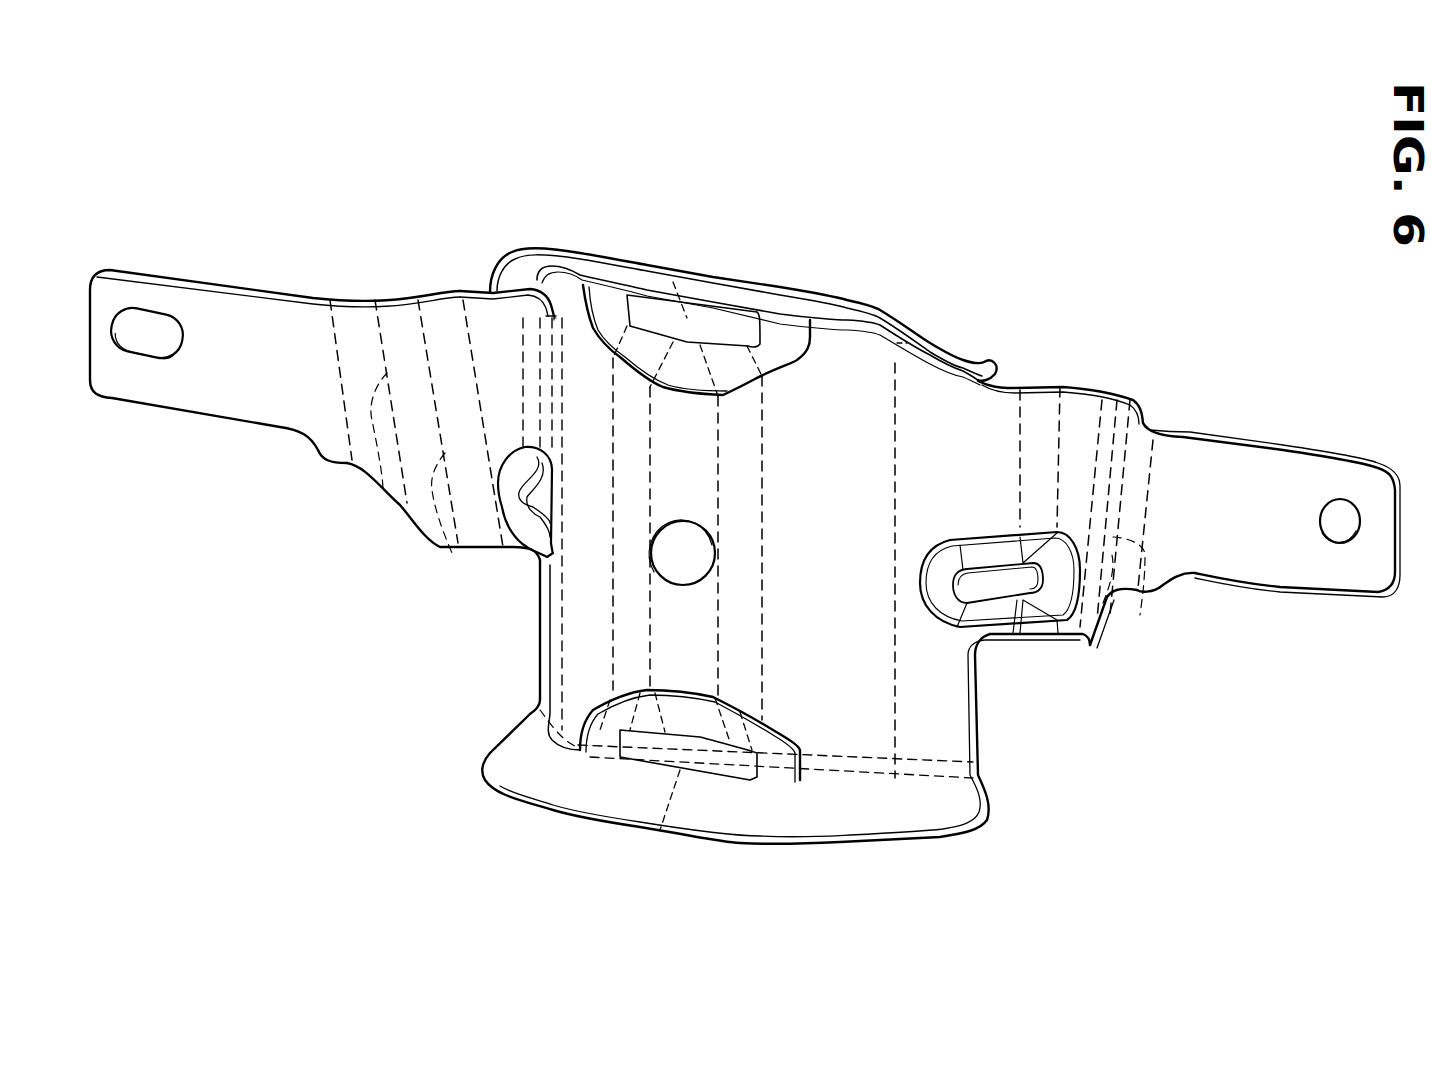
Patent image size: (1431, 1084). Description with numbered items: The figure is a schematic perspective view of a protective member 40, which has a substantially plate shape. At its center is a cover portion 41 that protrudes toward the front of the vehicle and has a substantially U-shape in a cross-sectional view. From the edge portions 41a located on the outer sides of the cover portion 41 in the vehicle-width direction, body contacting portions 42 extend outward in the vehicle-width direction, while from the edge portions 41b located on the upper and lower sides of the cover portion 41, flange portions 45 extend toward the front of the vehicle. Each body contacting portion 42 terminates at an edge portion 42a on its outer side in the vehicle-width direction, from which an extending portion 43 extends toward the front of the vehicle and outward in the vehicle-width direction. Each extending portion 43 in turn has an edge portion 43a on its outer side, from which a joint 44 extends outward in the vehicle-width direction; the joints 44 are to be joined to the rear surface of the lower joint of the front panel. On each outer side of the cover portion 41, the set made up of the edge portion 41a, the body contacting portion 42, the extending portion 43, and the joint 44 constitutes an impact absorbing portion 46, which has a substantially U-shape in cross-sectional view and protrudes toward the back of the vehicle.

The protective member 40 is at (918, 182).
The cover portion 41 is at (833, 657).
The edge portion 41a is at (553, 335).
The edge portion 41b is at (782, 305).
The body contacting portion 42 is at (490, 362).
The edge portion 42a is at (452, 555).
The extending portion 43 is at (397, 337).
The edge portion 43a is at (383, 488).
The joint 44 is at (220, 338).
The flange portion 45 is at (697, 290).
The impact absorbing portion 46 is at (460, 200).